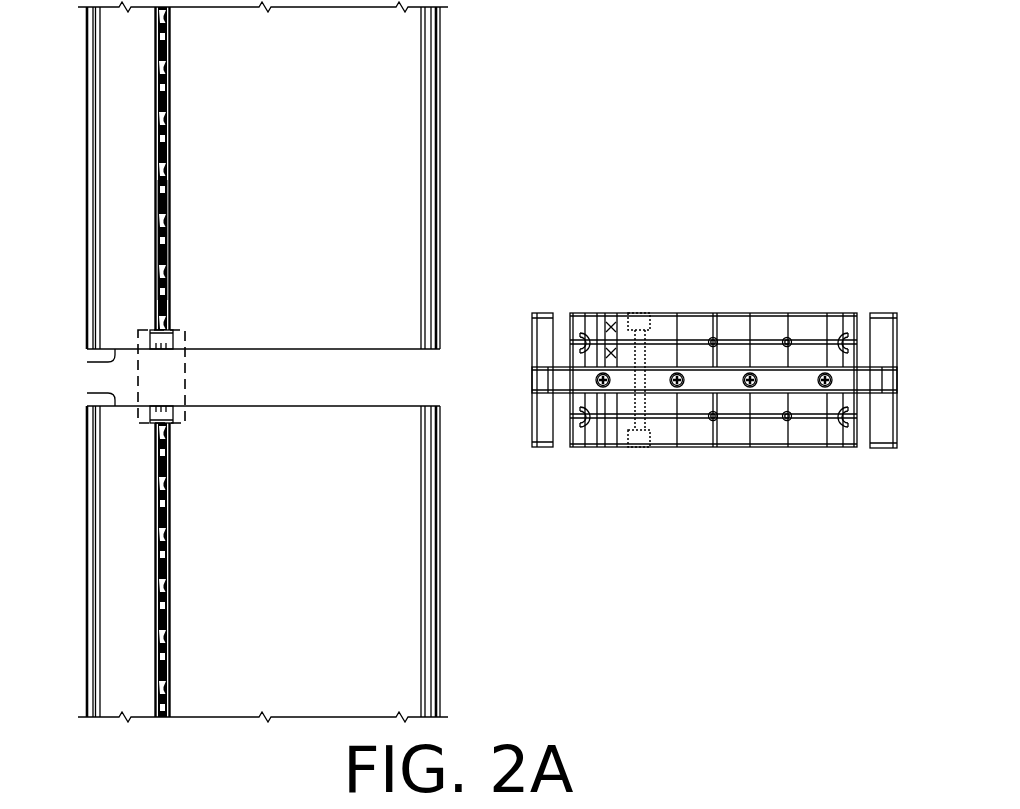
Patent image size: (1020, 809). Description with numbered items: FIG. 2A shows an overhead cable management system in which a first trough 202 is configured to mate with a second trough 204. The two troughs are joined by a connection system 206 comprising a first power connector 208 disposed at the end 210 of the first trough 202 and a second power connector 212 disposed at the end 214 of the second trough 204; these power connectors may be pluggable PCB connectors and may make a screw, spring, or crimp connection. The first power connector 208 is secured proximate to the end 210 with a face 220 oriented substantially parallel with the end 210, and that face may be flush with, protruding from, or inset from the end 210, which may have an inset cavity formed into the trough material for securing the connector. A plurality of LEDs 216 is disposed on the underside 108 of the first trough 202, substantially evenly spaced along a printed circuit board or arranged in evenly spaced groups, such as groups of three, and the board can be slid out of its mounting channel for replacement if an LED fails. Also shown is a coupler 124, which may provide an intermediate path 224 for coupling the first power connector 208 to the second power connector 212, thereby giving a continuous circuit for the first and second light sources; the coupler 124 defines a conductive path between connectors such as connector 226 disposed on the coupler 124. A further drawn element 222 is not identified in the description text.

The underside 108 is at (300, 131).
The coupler 124 is at (763, 487).
The first trough 202 is at (456, 90).
The second trough 204 is at (456, 665).
The connection system 206 is at (192, 378).
The first power connector 208 is at (163, 338).
The end 210 is at (110, 360).
The second power connector 212 is at (160, 415).
The end 214 is at (166, 279).
The plurality of LEDs 216 is at (163, 252).
The face 220 is at (166, 603).
The center slide member 222 is at (638, 378).
The intermediate path 224 is at (640, 318).
The connector 226 is at (640, 449).